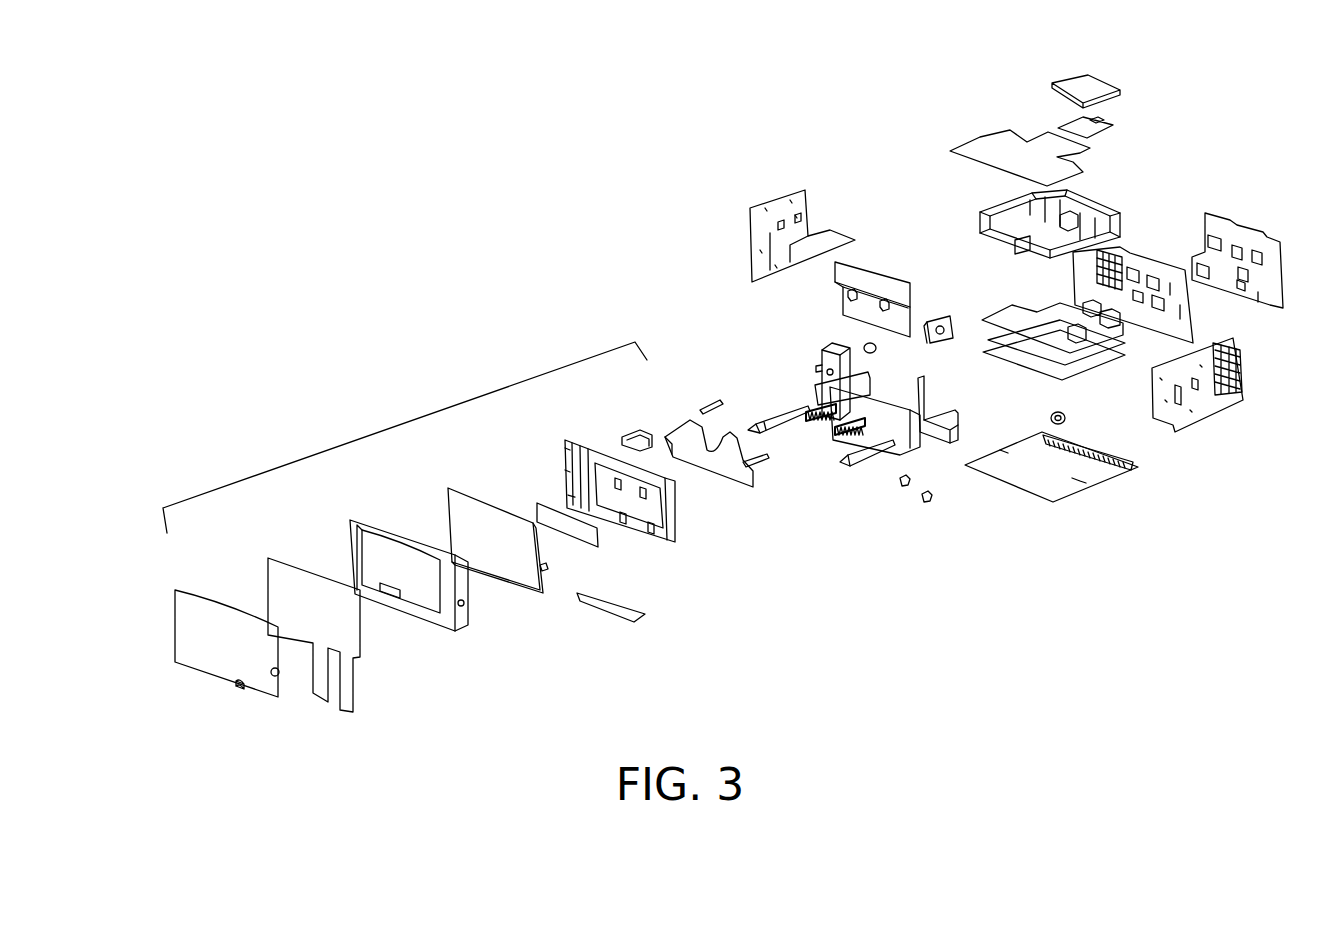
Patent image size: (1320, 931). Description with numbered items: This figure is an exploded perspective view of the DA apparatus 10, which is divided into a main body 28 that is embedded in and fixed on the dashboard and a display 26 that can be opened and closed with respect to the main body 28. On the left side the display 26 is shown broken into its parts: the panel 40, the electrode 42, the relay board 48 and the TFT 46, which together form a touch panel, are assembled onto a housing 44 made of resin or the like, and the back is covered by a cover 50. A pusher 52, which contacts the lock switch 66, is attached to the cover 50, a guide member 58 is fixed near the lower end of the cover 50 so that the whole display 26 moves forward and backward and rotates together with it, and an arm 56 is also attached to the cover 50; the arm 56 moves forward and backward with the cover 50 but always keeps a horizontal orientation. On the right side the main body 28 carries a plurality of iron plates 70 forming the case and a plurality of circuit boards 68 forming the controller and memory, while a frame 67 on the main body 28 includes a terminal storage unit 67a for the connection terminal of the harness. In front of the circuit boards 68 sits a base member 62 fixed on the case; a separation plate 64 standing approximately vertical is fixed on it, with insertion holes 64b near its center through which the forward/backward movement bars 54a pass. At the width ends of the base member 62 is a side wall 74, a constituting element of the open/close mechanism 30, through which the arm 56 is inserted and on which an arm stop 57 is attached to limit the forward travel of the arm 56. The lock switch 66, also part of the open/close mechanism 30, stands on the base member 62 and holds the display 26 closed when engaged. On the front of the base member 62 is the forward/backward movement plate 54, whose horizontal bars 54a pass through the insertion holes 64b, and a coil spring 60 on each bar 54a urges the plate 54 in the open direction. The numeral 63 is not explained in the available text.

The DA apparatus 10 is at (588, 222).
The display 26 is at (402, 422).
The main body 28 is at (1168, 130).
The open/close mechanism 30 is at (855, 588).
The panel 40 is at (196, 590).
The electrode 42 is at (286, 560).
The housing 44 is at (376, 525).
The TFT 46 is at (470, 490).
The relay board 48 is at (578, 545).
The cover 50 is at (588, 445).
The pusher 52 is at (636, 435).
The forward/backward movement plate 54 is at (727, 480).
The forward/backward movement bar 54a is at (765, 465).
The arm 56 is at (770, 425).
The arm stop 57 is at (865, 345).
The guide member 58 is at (705, 405).
The coil spring 60 is at (835, 424).
The base member 62 is at (897, 400).
The post 63 is at (820, 350).
The separation plate 64 is at (857, 265).
The insertion hole 64b is at (855, 293).
The lock switch 66 is at (935, 320).
The frame 67 is at (1000, 212).
The terminal storage unit 67a is at (1025, 250).
The circuit boards 68 is at (1020, 332).
The iron plates 70 is at (780, 206).
The side wall 74 is at (928, 401).